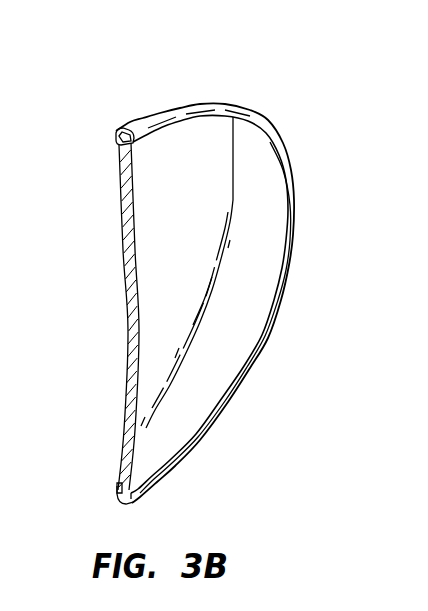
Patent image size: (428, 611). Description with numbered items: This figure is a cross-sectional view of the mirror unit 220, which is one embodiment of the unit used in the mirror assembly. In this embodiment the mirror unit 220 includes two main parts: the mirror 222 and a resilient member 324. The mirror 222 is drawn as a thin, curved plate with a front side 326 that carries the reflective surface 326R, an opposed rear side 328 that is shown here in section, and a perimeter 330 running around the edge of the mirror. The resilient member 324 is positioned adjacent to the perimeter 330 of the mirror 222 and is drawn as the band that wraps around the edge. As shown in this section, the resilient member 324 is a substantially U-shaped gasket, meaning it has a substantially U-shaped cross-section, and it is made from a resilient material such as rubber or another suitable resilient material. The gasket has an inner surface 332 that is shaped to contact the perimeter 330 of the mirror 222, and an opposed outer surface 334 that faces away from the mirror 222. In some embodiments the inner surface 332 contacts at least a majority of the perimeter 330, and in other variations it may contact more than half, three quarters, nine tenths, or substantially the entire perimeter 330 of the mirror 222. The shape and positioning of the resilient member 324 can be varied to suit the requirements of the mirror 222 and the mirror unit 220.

The mirror unit 220 is at (250, 91).
The mirror 222 is at (216, 379).
The resilient member 324 is at (199, 108).
The front side 326 is at (240, 337).
The reflective surface 326R is at (185, 423).
The rear side 328 is at (127, 340).
The perimeter 330 is at (117, 488).
The inner surface 332 is at (117, 143).
The outer surface 334 is at (146, 108).